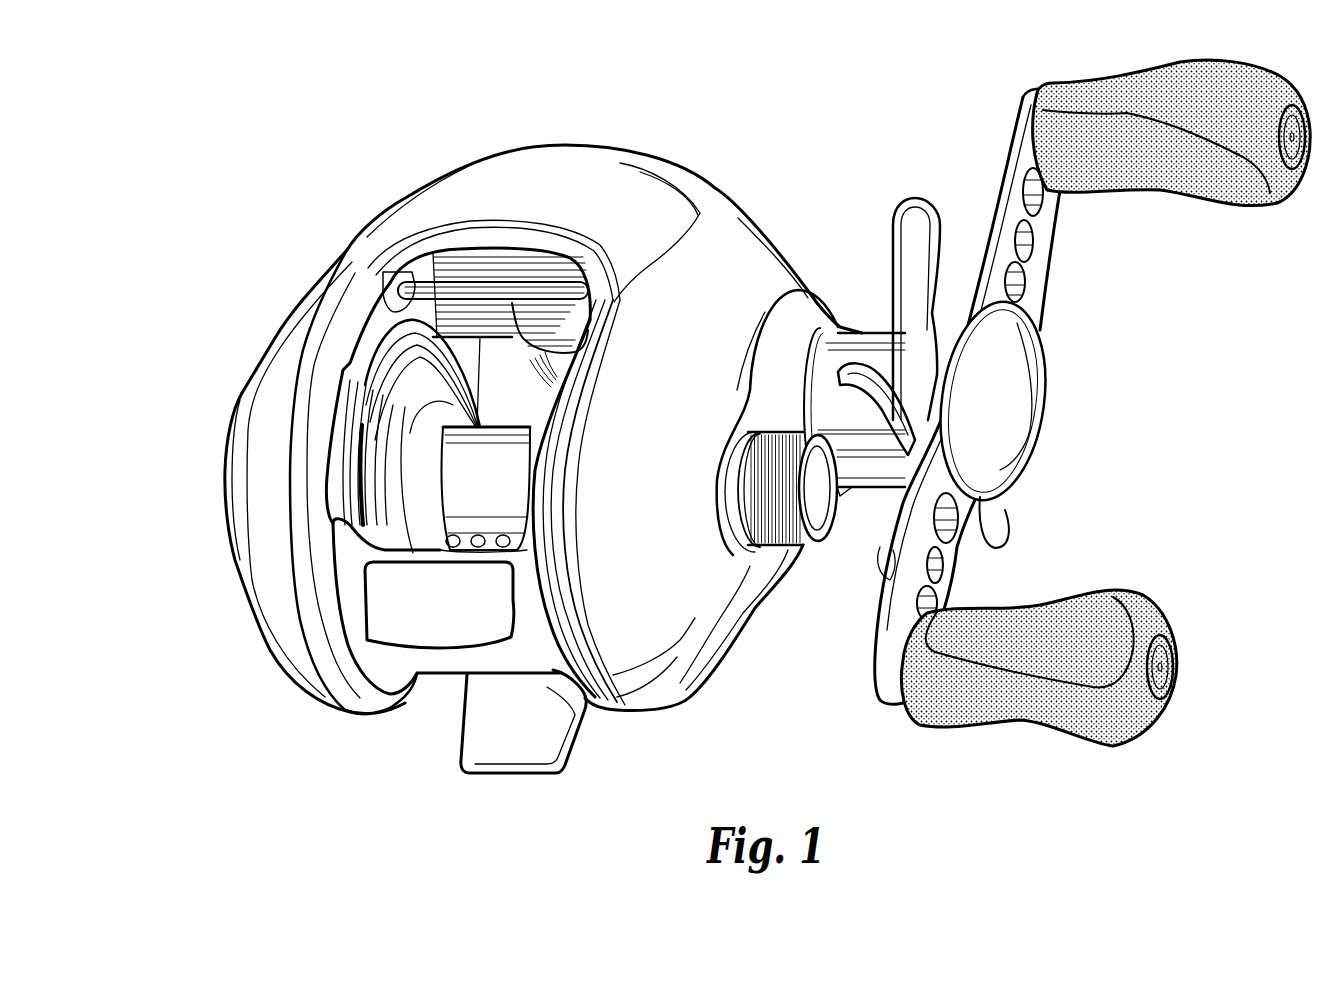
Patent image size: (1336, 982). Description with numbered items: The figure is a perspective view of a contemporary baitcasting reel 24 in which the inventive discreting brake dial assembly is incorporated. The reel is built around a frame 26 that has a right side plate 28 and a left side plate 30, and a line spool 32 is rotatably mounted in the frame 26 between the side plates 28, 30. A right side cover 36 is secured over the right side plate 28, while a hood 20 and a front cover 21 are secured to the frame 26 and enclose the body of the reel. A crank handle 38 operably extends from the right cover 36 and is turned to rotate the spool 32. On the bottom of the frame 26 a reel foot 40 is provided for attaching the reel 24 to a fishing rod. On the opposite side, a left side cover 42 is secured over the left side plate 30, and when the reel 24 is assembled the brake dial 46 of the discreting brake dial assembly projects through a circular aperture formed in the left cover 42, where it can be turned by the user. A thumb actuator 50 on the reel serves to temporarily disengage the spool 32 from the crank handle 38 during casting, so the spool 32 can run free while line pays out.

The hood 20 is at (562, 168).
The front cover 21 is at (721, 176).
The baitcasting reel 24 is at (385, 305).
The frame 26 is at (480, 284).
The right side plate 28 is at (563, 697).
The left side plate 30 is at (355, 660).
The line spool 32 is at (477, 440).
The right side cover 36 is at (678, 620).
The crank handle 38 is at (1043, 238).
The reel foot 40 is at (507, 750).
The left side cover 42 is at (293, 306).
The brake dial 46 is at (226, 436).
The thumb actuator 50 is at (440, 642).